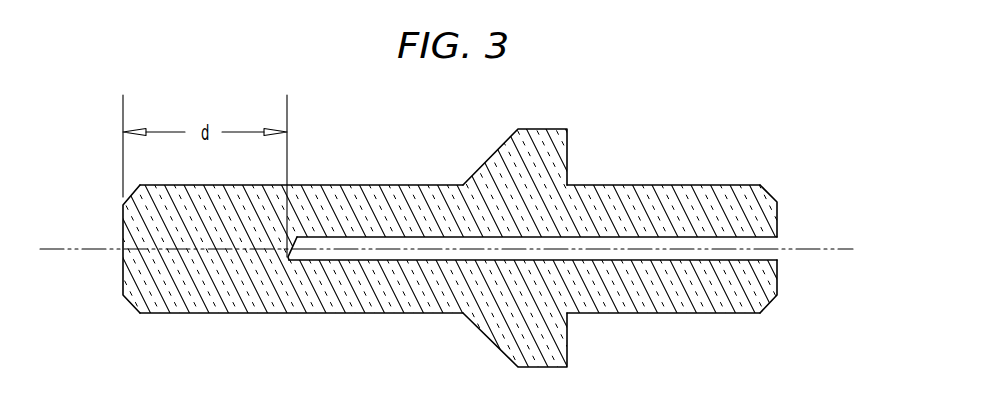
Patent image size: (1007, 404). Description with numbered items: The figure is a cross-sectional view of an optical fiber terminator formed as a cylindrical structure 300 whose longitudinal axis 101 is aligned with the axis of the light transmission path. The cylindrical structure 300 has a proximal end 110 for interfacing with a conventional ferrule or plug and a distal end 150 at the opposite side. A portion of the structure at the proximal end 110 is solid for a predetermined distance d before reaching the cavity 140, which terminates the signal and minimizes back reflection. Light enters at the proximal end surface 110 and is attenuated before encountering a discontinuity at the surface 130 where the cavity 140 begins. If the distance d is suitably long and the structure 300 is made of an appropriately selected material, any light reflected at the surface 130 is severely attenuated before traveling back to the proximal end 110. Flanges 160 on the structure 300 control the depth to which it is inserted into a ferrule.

The cylindrical structure 300 is at (613, 172).
The proximal end 110 is at (123, 233).
The distal end 150 is at (778, 220).
The flanges 160 is at (498, 165).
The cavity 140 is at (636, 261).
The surface 130 is at (288, 257).
The longitudinal axis 101 is at (82, 252).